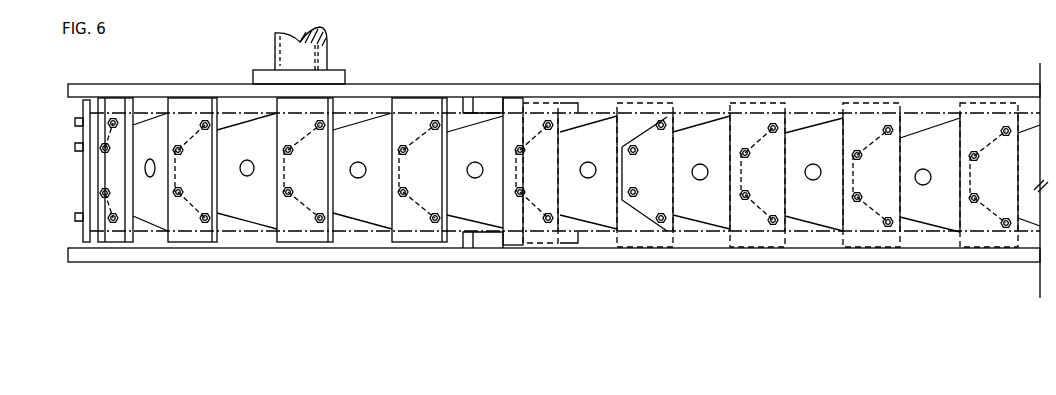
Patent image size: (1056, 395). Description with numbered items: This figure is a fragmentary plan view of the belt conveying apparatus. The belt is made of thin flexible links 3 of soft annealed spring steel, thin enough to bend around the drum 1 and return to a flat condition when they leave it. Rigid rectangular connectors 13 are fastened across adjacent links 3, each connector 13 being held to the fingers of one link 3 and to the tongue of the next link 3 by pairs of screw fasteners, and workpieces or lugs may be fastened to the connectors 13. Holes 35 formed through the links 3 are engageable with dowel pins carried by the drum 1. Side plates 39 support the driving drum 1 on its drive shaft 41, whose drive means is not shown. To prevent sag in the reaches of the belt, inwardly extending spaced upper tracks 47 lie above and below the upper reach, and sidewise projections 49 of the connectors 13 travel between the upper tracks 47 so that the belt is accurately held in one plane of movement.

The drum 1 is at (145, 110).
The link 3 is at (158, 151).
The connector 13 is at (643, 278).
The hole 35 is at (150, 177).
The side plate 39 is at (445, 85).
The drive shaft 41 is at (328, 50).
The upper track 47 is at (490, 103).
The sidewise projection 49 is at (105, 97).